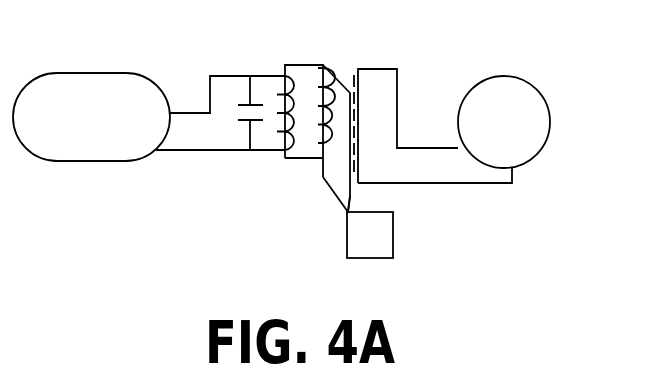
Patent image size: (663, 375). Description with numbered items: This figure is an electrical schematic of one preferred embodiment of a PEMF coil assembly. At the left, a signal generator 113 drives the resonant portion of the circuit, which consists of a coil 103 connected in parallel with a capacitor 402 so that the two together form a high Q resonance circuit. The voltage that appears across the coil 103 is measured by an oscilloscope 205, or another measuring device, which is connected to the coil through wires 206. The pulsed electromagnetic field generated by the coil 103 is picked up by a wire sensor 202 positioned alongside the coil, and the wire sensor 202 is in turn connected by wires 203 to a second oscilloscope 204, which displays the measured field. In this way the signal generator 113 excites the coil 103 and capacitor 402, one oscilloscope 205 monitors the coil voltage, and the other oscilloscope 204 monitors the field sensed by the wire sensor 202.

The signal generator 113 is at (80, 162).
The capacitor 402 is at (253, 151).
The coil 103 is at (302, 159).
The wire sensor 202 is at (352, 74).
The wires 203 is at (393, 67).
The oscilloscope 204 is at (518, 133).
The oscilloscope 205 is at (390, 250).
The wires 206 is at (354, 199).